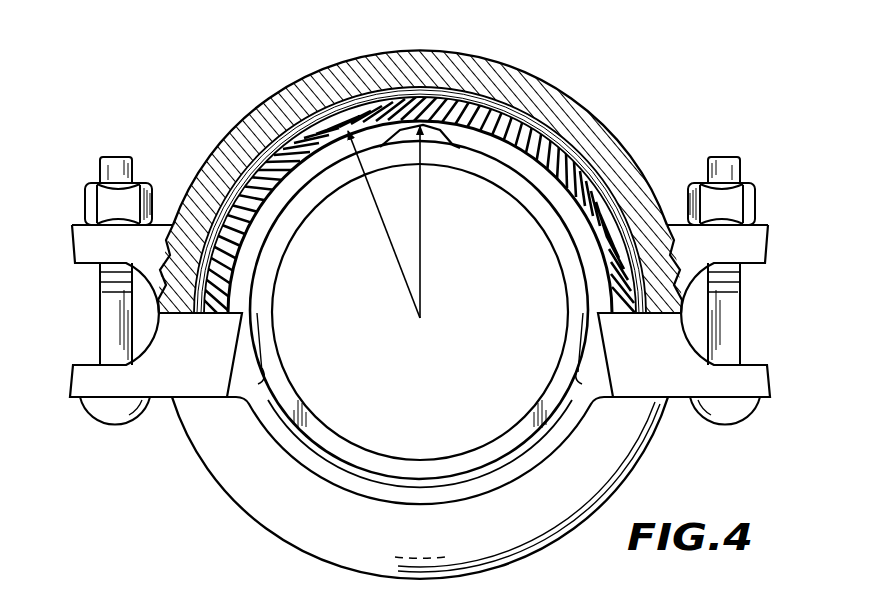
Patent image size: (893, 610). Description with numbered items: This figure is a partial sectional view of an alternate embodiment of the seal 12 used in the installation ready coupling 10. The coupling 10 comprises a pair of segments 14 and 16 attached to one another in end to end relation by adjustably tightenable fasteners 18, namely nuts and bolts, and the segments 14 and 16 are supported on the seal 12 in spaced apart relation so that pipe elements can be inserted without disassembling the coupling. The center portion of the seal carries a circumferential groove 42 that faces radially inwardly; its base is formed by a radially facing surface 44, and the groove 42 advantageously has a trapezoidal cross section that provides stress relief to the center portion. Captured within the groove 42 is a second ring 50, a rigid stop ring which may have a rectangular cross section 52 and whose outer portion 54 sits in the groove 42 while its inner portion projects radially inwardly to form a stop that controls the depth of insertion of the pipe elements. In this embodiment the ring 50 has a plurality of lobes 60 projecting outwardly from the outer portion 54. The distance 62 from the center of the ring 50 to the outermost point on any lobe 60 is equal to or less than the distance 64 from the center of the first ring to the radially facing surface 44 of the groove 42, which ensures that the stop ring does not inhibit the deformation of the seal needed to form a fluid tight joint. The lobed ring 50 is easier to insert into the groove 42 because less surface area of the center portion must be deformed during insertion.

The coupling 10 is at (247, 95).
The seal 12 is at (512, 120).
The segment 14 is at (608, 132).
The segment 16 is at (262, 510).
The fasteners 18 is at (738, 323).
The circumferential groove 42 is at (296, 174).
The radially facing surface 44 is at (270, 202).
The second ring 50 is at (571, 280).
The rectangular cross section 52 is at (558, 347).
The outer portion 54 is at (545, 218).
The lobes 60 is at (452, 94).
The distance 62 is at (425, 247).
The distance 64 is at (398, 262).